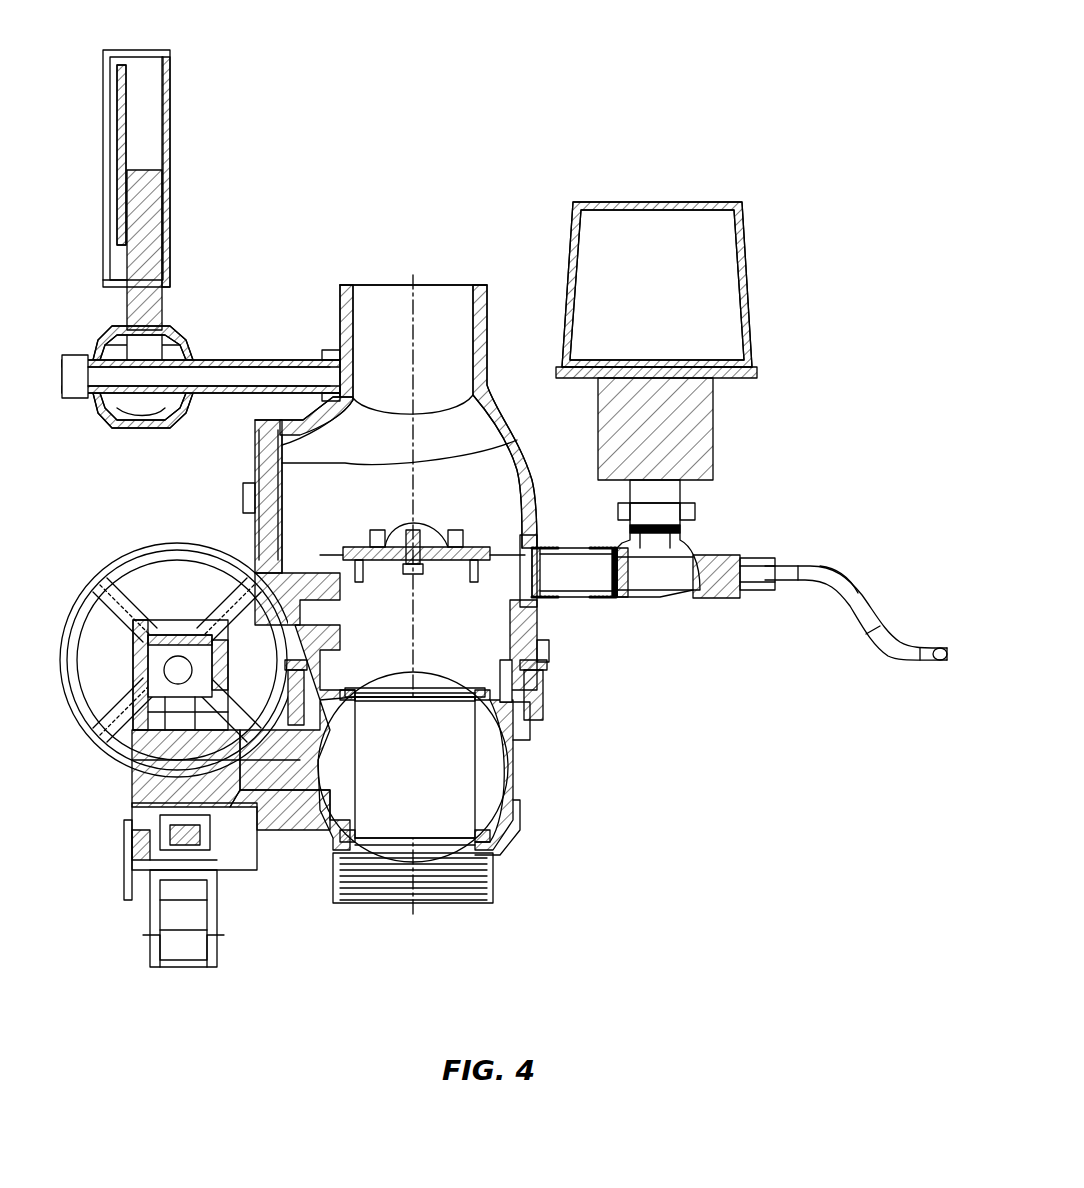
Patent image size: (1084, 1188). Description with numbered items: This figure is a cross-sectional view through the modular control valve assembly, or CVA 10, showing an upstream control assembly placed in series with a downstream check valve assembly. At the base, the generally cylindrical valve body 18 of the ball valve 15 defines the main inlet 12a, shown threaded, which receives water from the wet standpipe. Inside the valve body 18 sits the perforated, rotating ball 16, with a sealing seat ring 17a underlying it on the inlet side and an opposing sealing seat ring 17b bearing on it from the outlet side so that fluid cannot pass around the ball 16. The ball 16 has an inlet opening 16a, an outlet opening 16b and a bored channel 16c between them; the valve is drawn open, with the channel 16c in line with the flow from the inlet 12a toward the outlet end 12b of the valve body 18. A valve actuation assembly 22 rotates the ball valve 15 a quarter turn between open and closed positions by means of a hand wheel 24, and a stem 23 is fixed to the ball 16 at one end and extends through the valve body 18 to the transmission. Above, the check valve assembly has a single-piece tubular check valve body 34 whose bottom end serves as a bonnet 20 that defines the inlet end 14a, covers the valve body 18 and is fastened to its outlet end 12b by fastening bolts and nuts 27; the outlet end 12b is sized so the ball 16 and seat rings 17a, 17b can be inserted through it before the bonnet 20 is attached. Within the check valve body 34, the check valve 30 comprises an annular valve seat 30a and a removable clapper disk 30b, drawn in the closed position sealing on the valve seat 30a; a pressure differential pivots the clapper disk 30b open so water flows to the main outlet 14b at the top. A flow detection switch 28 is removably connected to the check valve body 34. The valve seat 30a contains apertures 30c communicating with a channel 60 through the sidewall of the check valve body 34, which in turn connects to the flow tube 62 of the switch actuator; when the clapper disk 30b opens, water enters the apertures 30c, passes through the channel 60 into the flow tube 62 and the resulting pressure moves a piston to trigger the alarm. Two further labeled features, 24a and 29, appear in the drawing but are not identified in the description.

The modular control valve assembly 10 is at (778, 20).
The main inlet 12a is at (488, 905).
The outlet end 12b is at (520, 702).
The inlet end 14a is at (388, 690).
The main outlet 14b is at (350, 290).
The ball valve 15 is at (507, 800).
The ball 16 is at (502, 786).
The inlet opening 16a is at (438, 850).
The outlet opening 16b is at (448, 700).
The channel 16c is at (388, 795).
The sealing seat ring 17a is at (332, 842).
The sealing seat ring 17b is at (490, 705).
The valve body 18 is at (500, 742).
The bonnet 20 is at (505, 672).
The valve actuation assembly 22 is at (128, 796).
The stem 23 is at (276, 772).
The hand wheel 24 is at (171, 641).
The handwheel spokes 24a is at (197, 548).
The fastening bolts/nuts 27 is at (545, 665).
The flow detection switch 28 is at (680, 196).
The retainer 29 is at (502, 706).
The check valve 30 is at (407, 524).
The valve seat 30a is at (345, 565).
The clapper disk 30b is at (358, 535).
The apertures 30c is at (490, 565).
The check valve body 34 is at (520, 430).
The channel 60 is at (505, 583).
The flow tube 62 is at (660, 575).